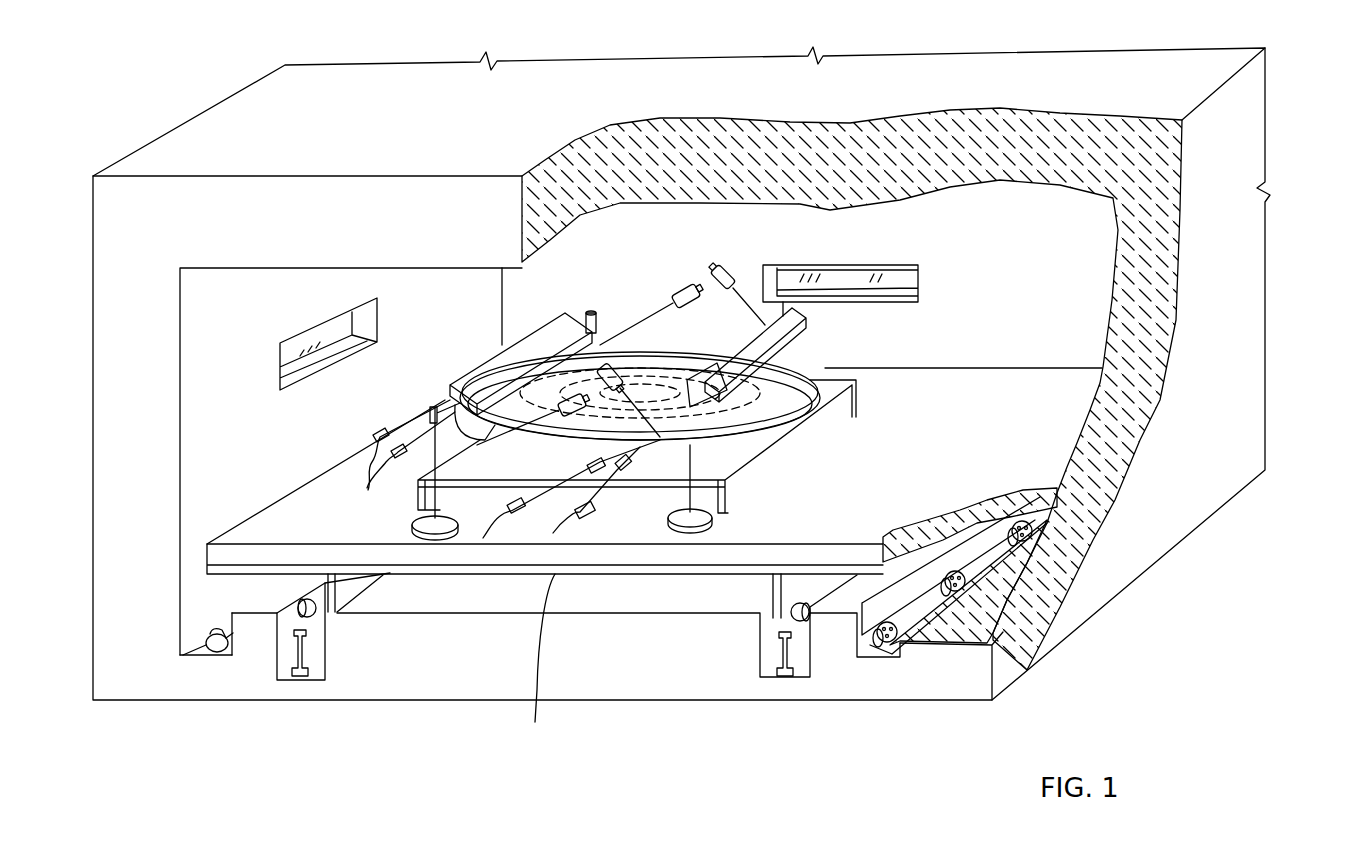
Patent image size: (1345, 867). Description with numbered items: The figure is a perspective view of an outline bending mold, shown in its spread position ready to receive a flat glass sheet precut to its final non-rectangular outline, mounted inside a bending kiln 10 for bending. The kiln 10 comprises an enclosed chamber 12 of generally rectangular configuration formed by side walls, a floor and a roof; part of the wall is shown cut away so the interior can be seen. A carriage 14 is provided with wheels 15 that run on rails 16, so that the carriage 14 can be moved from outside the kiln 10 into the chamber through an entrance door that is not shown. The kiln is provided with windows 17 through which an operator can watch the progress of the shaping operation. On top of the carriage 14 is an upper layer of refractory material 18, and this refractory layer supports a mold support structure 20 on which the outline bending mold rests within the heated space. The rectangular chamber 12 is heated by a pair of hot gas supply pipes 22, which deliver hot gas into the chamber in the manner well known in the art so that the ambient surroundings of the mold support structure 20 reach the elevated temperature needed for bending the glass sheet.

The bending kiln 10 is at (1088, 626).
The enclosed chamber 12 is at (1077, 245).
The carriage 14 is at (539, 666).
The wheels 15 is at (300, 614).
The rails 16 is at (300, 682).
The windows 17 is at (317, 327).
The refractory material 18 is at (775, 540).
The mold support structure 20 is at (805, 435).
The hot gas supply pipes 22 is at (215, 654).